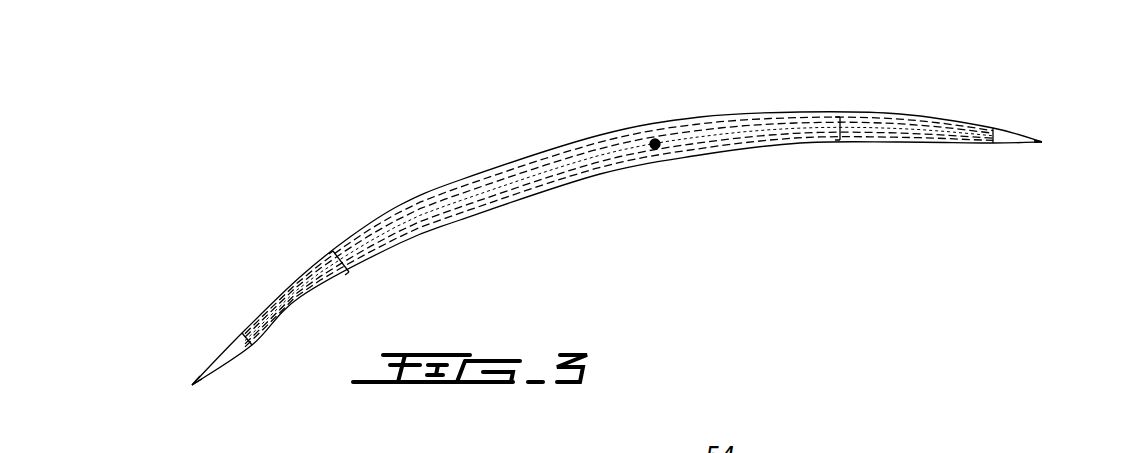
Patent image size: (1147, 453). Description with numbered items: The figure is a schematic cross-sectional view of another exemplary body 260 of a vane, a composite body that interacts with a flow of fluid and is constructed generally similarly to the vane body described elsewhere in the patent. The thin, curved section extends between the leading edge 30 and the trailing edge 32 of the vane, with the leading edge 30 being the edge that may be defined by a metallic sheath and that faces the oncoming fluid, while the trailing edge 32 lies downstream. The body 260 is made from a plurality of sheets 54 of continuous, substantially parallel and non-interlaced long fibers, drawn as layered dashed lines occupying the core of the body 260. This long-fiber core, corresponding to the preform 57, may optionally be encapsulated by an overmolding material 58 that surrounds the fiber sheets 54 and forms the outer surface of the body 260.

The body 260 is at (472, 115).
The leading edge 30 is at (192, 385).
The trailing edge 32 is at (1042, 142).
The sheet 54 is at (418, 212).
The preform 57 is at (655, 143).
The overmolding material 58 is at (547, 188).